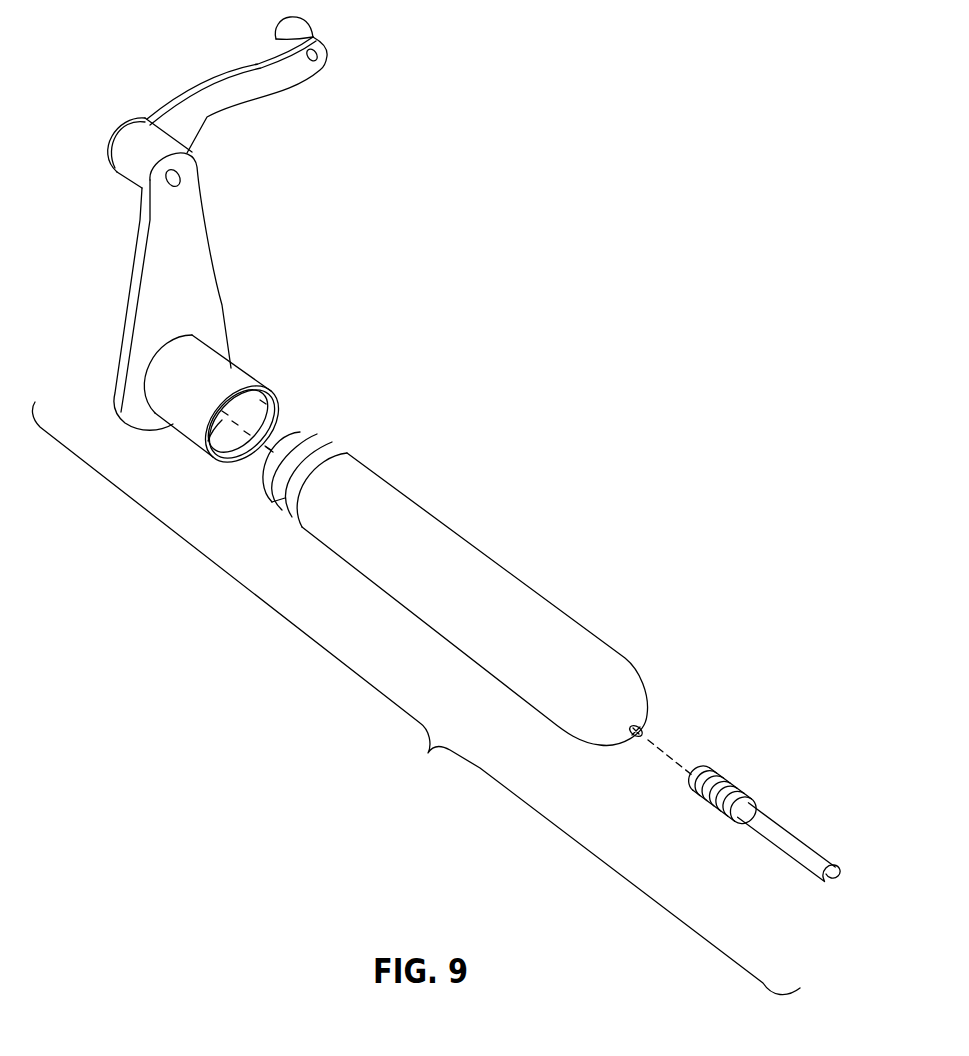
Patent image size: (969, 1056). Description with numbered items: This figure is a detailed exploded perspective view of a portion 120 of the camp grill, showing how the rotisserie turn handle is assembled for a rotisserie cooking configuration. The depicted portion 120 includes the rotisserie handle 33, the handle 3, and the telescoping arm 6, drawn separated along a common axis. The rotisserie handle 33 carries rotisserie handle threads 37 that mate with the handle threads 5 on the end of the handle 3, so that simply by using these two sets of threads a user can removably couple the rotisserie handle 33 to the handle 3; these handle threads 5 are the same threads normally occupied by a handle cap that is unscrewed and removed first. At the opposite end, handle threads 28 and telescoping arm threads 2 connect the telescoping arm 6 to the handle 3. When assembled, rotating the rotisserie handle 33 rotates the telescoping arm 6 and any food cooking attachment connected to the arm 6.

The portion of the camp grill 120 is at (416, 698).
The rotisserie handle 33 is at (233, 107).
The rotisserie handle threads 37 is at (262, 403).
The handle threads 5 is at (272, 502).
The handle 3 is at (498, 572).
The handle threads 28 is at (645, 728).
The telescoping arm threads 2 is at (728, 783).
The telescoping arm 6 is at (787, 840).